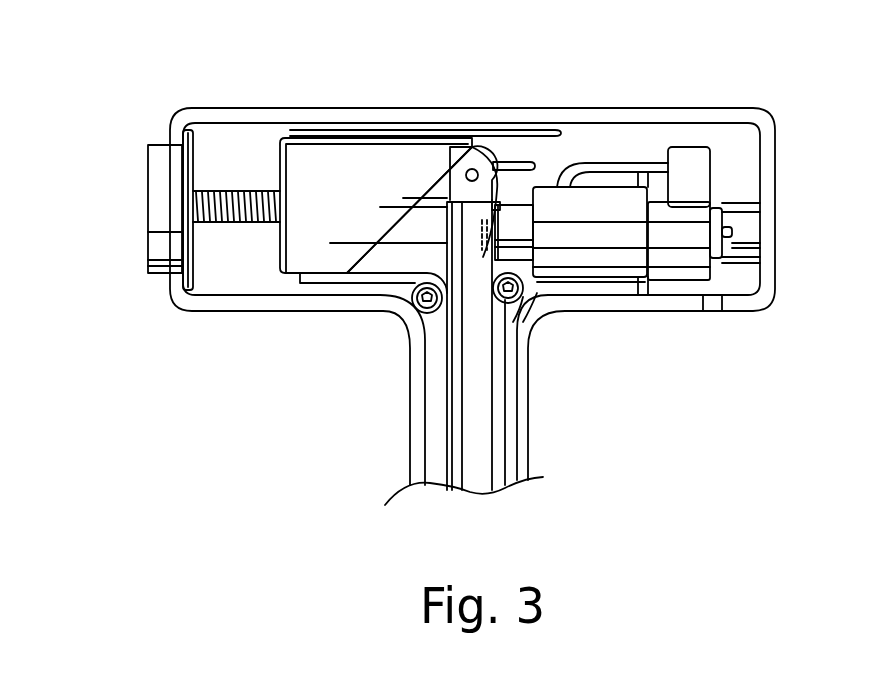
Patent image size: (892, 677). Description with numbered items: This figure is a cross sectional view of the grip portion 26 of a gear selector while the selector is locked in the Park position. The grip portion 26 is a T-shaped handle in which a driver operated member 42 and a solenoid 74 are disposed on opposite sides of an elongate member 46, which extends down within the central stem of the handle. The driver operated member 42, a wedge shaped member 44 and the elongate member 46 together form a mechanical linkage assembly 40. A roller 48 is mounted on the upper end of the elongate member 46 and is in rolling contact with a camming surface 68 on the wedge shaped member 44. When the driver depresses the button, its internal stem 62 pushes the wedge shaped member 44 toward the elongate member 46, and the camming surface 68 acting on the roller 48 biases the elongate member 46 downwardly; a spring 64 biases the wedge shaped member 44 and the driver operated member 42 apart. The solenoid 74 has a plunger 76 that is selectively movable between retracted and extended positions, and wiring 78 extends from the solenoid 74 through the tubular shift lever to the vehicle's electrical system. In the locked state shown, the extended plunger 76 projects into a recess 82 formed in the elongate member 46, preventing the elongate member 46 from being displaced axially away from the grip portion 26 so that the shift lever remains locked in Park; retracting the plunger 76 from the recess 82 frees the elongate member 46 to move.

The grip portion 26 is at (676, 108).
The mechanical linkage assembly 40 is at (277, 252).
The driver operated member 42 is at (147, 222).
The wedge shaped member 44 is at (373, 157).
The elongate member 46 is at (480, 427).
The roller 48 is at (482, 150).
The internal stem 62 is at (190, 128).
The spring 64 is at (251, 190).
The camming surface 68 is at (420, 200).
The solenoid 74 is at (630, 277).
The plunger 76 is at (476, 147).
The wiring 78 is at (603, 162).
The recess 82 is at (422, 195).